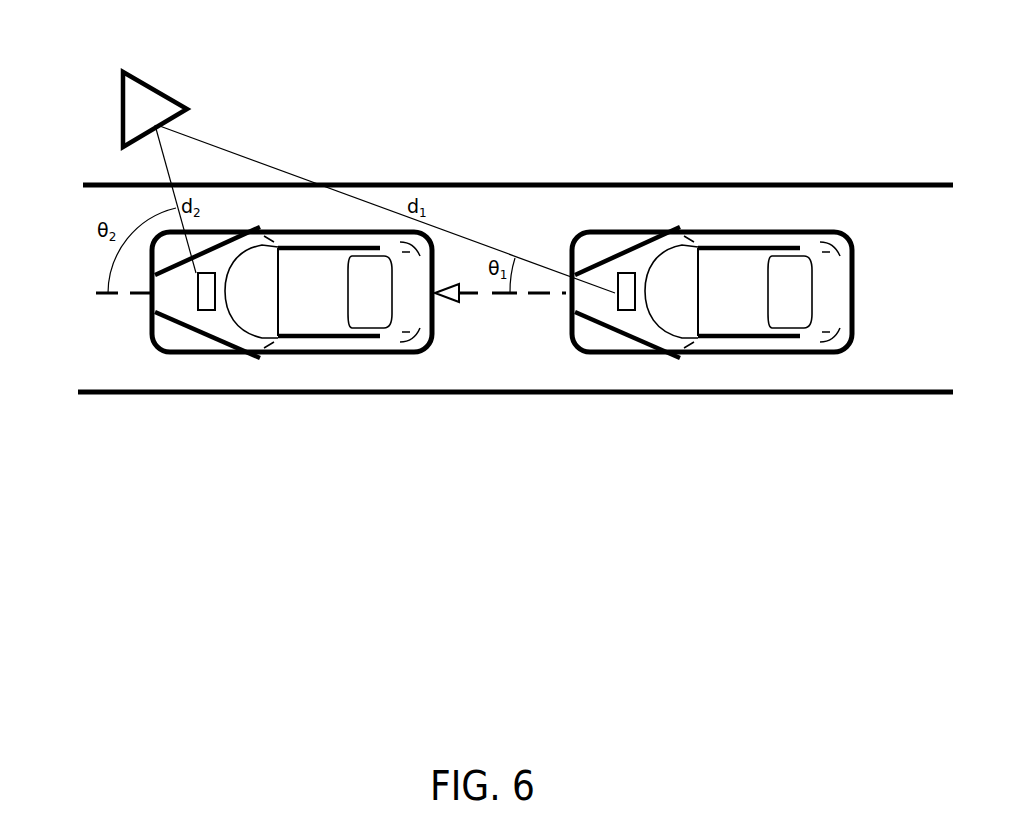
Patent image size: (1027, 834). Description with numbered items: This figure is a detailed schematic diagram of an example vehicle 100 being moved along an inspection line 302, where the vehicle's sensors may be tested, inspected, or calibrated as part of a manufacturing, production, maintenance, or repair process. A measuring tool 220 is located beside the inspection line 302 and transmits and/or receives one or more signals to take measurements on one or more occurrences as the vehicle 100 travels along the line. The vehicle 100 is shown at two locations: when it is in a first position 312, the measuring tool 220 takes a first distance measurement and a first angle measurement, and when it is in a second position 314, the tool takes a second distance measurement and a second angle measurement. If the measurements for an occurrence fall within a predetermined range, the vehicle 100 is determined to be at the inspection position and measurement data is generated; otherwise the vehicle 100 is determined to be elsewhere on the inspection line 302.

The vehicle 100 is at (541, 320).
The measuring tool 220 is at (112, 64).
The inspection line 302 is at (820, 574).
The first position 312 is at (793, 355).
The second position 314 is at (357, 357).